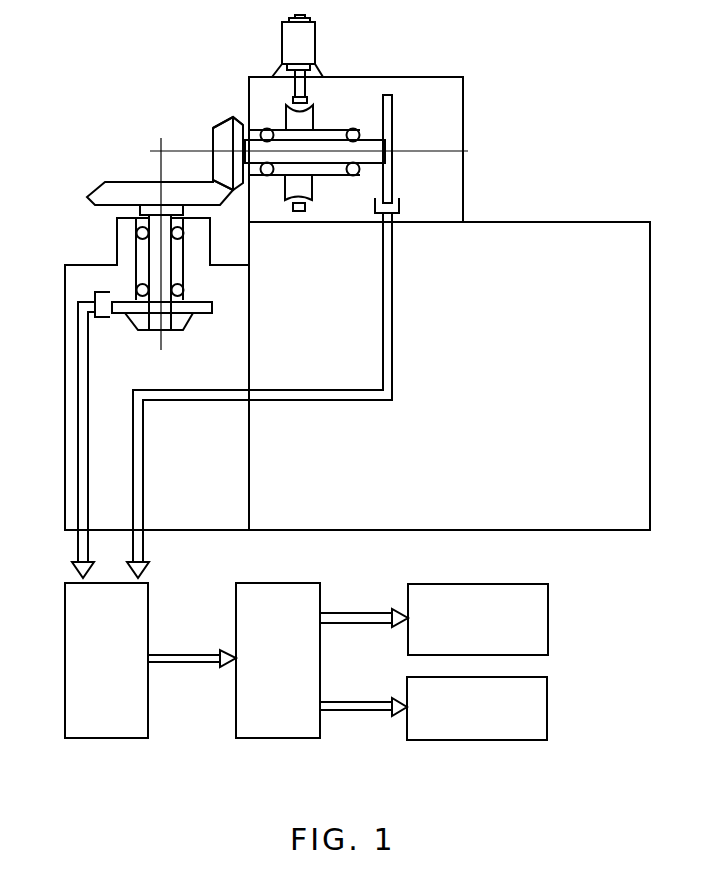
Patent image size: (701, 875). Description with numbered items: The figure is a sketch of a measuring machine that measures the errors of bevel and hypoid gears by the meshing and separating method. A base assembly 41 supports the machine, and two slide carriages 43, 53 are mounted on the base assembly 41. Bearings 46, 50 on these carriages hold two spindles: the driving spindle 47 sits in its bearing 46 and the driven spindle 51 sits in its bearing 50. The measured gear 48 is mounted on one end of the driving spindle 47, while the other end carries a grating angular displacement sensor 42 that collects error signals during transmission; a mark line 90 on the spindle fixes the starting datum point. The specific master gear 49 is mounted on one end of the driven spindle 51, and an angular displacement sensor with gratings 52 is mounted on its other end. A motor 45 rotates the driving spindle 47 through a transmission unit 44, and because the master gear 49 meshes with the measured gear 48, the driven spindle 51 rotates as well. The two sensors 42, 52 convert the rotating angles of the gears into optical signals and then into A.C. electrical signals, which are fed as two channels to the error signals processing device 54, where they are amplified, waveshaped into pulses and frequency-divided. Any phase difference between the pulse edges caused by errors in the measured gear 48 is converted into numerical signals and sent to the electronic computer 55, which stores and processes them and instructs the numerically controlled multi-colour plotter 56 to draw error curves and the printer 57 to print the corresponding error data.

The base assembly 41 is at (570, 233).
The grating angular displacement sensor 42 is at (385, 188).
The slide carriage 43 is at (435, 108).
The transmission unit 44 is at (302, 117).
The motor 45 is at (307, 48).
The bearing 46 is at (267, 128).
The driving spindle 47 is at (225, 132).
The measured gear 48 is at (218, 142).
The specific master gear 49 is at (138, 183).
The bearing 50 is at (137, 232).
The driven spindle 51 is at (158, 265).
The angular displacement sensor with gratings 52 is at (95, 300).
The slide carriage 53 is at (72, 395).
The error signals processing device 54 is at (133, 710).
The electronic computer 55 is at (308, 727).
The numerically controlled multi-colour plotter 56 is at (538, 705).
The printer 57 is at (538, 609).
The mark line 90 is at (135, 323).